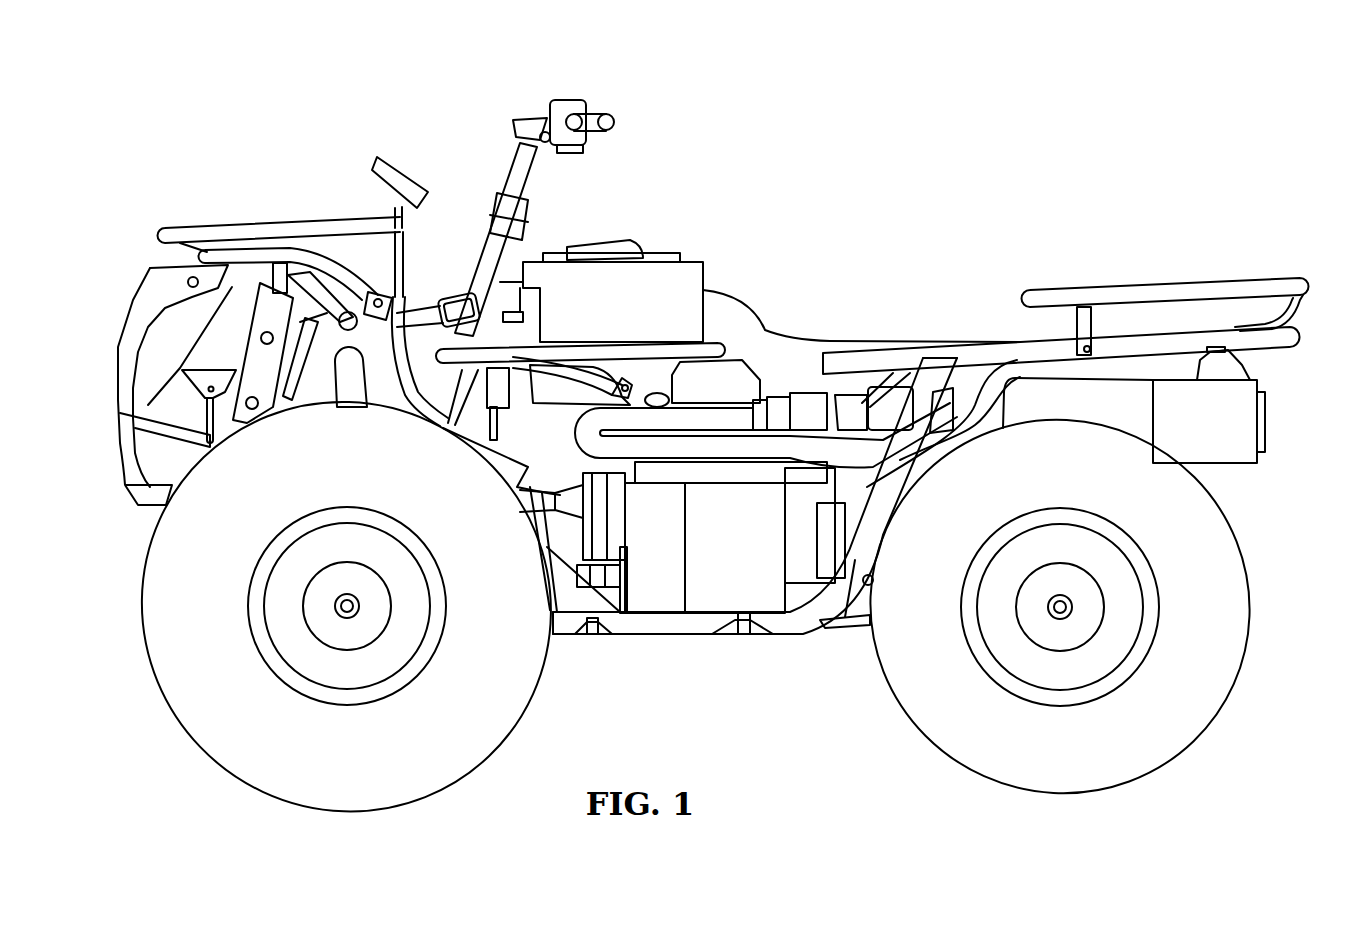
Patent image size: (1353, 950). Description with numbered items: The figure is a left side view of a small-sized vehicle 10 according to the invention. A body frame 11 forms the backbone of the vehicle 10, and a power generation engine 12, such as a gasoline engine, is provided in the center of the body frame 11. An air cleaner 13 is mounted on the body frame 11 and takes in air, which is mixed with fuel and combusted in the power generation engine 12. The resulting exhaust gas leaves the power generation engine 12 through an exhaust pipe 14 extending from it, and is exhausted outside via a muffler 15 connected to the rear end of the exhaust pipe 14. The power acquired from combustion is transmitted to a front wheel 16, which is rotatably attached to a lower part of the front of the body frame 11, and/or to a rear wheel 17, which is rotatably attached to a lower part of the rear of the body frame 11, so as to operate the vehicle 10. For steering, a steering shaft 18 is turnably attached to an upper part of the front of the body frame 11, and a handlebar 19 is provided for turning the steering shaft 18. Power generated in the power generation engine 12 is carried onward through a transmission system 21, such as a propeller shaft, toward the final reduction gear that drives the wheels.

The vehicle 10 is at (875, 212).
The body frame 11 is at (665, 625).
The power generation engine 12 is at (728, 555).
The air cleaner 13 is at (610, 243).
The exhaust pipe 14 is at (712, 445).
The muffler 15 is at (1180, 387).
The front wheel 16 is at (177, 716).
The rear wheel 17 is at (1205, 735).
The steering shaft 18 is at (480, 248).
The handlebar 19 is at (590, 122).
The transmission system 21 is at (588, 573).